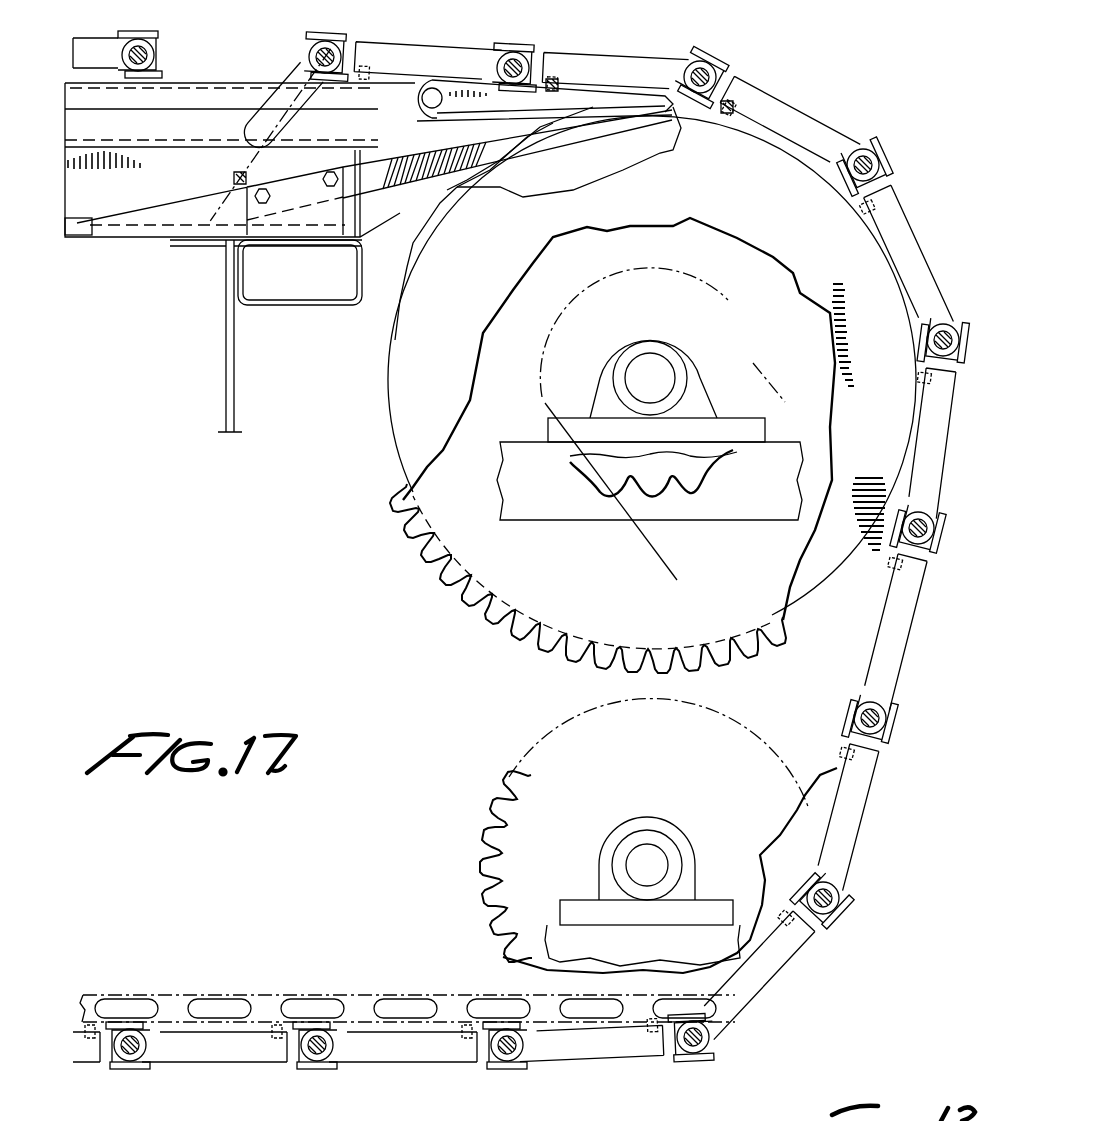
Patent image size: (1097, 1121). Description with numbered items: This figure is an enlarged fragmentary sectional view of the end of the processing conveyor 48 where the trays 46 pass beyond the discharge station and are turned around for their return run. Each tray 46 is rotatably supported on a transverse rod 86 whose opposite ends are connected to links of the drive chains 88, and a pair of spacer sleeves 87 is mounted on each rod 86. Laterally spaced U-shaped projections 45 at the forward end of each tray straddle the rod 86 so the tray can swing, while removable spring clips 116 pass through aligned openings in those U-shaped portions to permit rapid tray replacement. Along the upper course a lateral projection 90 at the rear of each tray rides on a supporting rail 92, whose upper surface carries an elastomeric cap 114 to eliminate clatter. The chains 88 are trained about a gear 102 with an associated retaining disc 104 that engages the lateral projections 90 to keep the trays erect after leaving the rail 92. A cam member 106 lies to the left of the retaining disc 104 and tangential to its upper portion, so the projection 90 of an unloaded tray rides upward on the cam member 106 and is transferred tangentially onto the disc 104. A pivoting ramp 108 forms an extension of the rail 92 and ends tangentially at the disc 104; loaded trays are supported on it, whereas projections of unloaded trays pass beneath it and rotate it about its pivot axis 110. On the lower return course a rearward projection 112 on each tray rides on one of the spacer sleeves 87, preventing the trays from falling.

The U-shaped projections 45 is at (157, 37).
The trays 46 is at (302, 72).
The processing conveyor 48 is at (630, 32).
The transverse rod 86 is at (158, 55).
The spacer sleeves 87 is at (132, 38).
The drive chains 88 is at (277, 990).
The lateral projection 90 is at (232, 178).
The supporting rail 92 is at (223, 83).
The gear 102 is at (483, 613).
The retaining disc 104 is at (817, 228).
The cam member 106 is at (147, 205).
The pivoting ramp 108 is at (445, 118).
The pivot axis 110 is at (432, 88).
The rearward projection 112 is at (337, 84).
The elastomeric cap 114 is at (197, 97).
The spring clips 116 is at (150, 80).